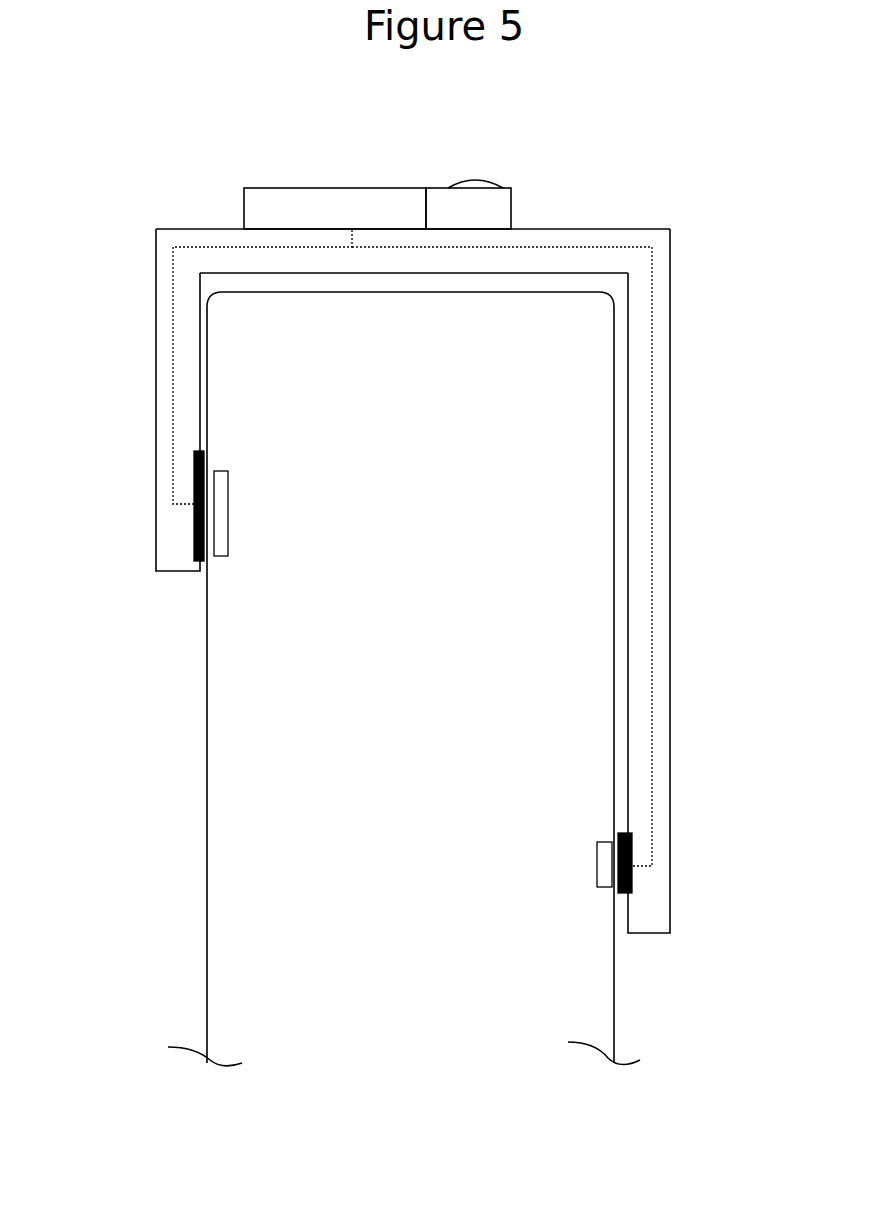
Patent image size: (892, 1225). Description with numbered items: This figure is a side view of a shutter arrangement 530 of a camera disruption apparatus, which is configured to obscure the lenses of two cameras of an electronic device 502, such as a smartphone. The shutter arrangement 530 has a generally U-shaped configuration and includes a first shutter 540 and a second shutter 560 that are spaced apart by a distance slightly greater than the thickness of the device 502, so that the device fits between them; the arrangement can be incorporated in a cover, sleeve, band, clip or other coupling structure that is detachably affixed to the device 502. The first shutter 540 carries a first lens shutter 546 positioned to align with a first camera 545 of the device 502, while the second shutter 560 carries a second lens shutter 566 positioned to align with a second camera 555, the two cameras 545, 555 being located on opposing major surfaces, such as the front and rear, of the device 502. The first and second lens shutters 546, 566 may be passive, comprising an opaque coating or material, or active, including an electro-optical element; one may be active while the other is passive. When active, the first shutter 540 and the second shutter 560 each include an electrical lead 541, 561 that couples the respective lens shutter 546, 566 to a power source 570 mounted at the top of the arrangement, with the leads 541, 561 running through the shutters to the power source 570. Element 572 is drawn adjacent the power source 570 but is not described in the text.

The electronic device 502 is at (422, 690).
The shutter arrangement 530 is at (426, 554).
The first shutter 540 is at (156, 363).
The electrical lead 541 is at (173, 427).
The first camera 545 is at (228, 513).
The first lens shutter 546 is at (203, 452).
The second camera 555 is at (597, 858).
The second shutter 560 is at (672, 390).
The electrical lead 561 is at (652, 533).
The second lens shutter 566 is at (613, 888).
The power source 570 is at (303, 187).
The indicator 572 is at (478, 177).